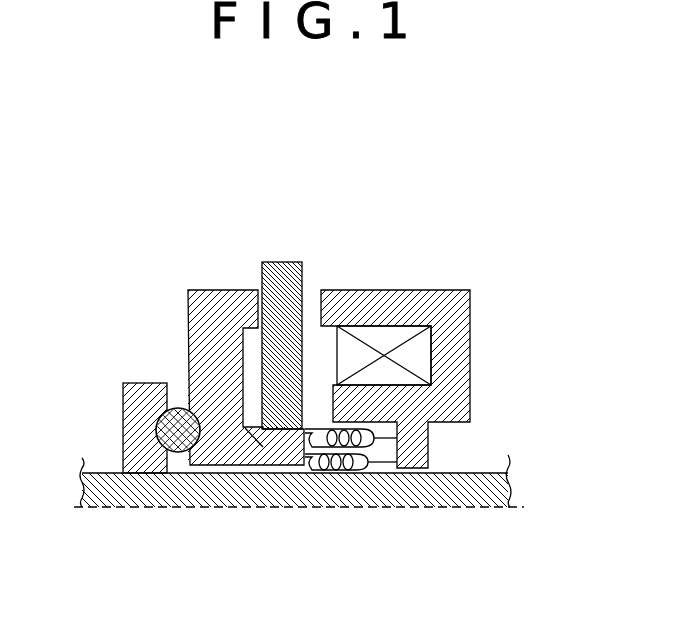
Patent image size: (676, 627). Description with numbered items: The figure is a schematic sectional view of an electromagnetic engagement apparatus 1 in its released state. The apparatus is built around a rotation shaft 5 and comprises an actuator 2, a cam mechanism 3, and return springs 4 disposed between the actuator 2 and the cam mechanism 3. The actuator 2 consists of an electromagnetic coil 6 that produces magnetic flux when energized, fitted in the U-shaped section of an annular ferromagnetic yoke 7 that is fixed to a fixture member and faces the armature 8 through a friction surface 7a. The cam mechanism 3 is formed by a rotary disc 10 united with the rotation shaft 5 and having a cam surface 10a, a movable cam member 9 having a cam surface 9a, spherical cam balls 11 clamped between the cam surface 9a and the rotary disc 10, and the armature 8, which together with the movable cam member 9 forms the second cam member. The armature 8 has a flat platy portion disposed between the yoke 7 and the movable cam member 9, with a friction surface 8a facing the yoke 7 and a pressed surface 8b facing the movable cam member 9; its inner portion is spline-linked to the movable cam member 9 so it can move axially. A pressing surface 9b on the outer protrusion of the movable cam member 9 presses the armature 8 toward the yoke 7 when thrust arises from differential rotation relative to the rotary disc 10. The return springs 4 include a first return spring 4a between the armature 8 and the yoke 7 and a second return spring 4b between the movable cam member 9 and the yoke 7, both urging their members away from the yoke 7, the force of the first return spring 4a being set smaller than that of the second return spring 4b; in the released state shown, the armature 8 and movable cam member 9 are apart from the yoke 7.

The electromagnetic engagement apparatus 1 is at (322, 170).
The actuator 2 is at (405, 262).
The cam mechanism 3 is at (200, 222).
The return springs 4 is at (354, 502).
The first return spring 4a is at (388, 441).
The second return spring 4b is at (369, 458).
The rotation shaft 5 is at (470, 481).
The electromagnetic coil 6 is at (417, 357).
The yoke 7 is at (462, 309).
The friction surface 7a is at (321, 289).
The armature 8 is at (280, 262).
The friction surface 8a is at (306, 292).
The pressed surface 8b is at (257, 291).
The movable cam member 9 is at (188, 305).
The cam surface 9a is at (192, 402).
The pressing surface 9b is at (250, 297).
The rotary disc 10 is at (128, 383).
The cam surface 10a is at (157, 414).
The cam balls 11 is at (175, 408).